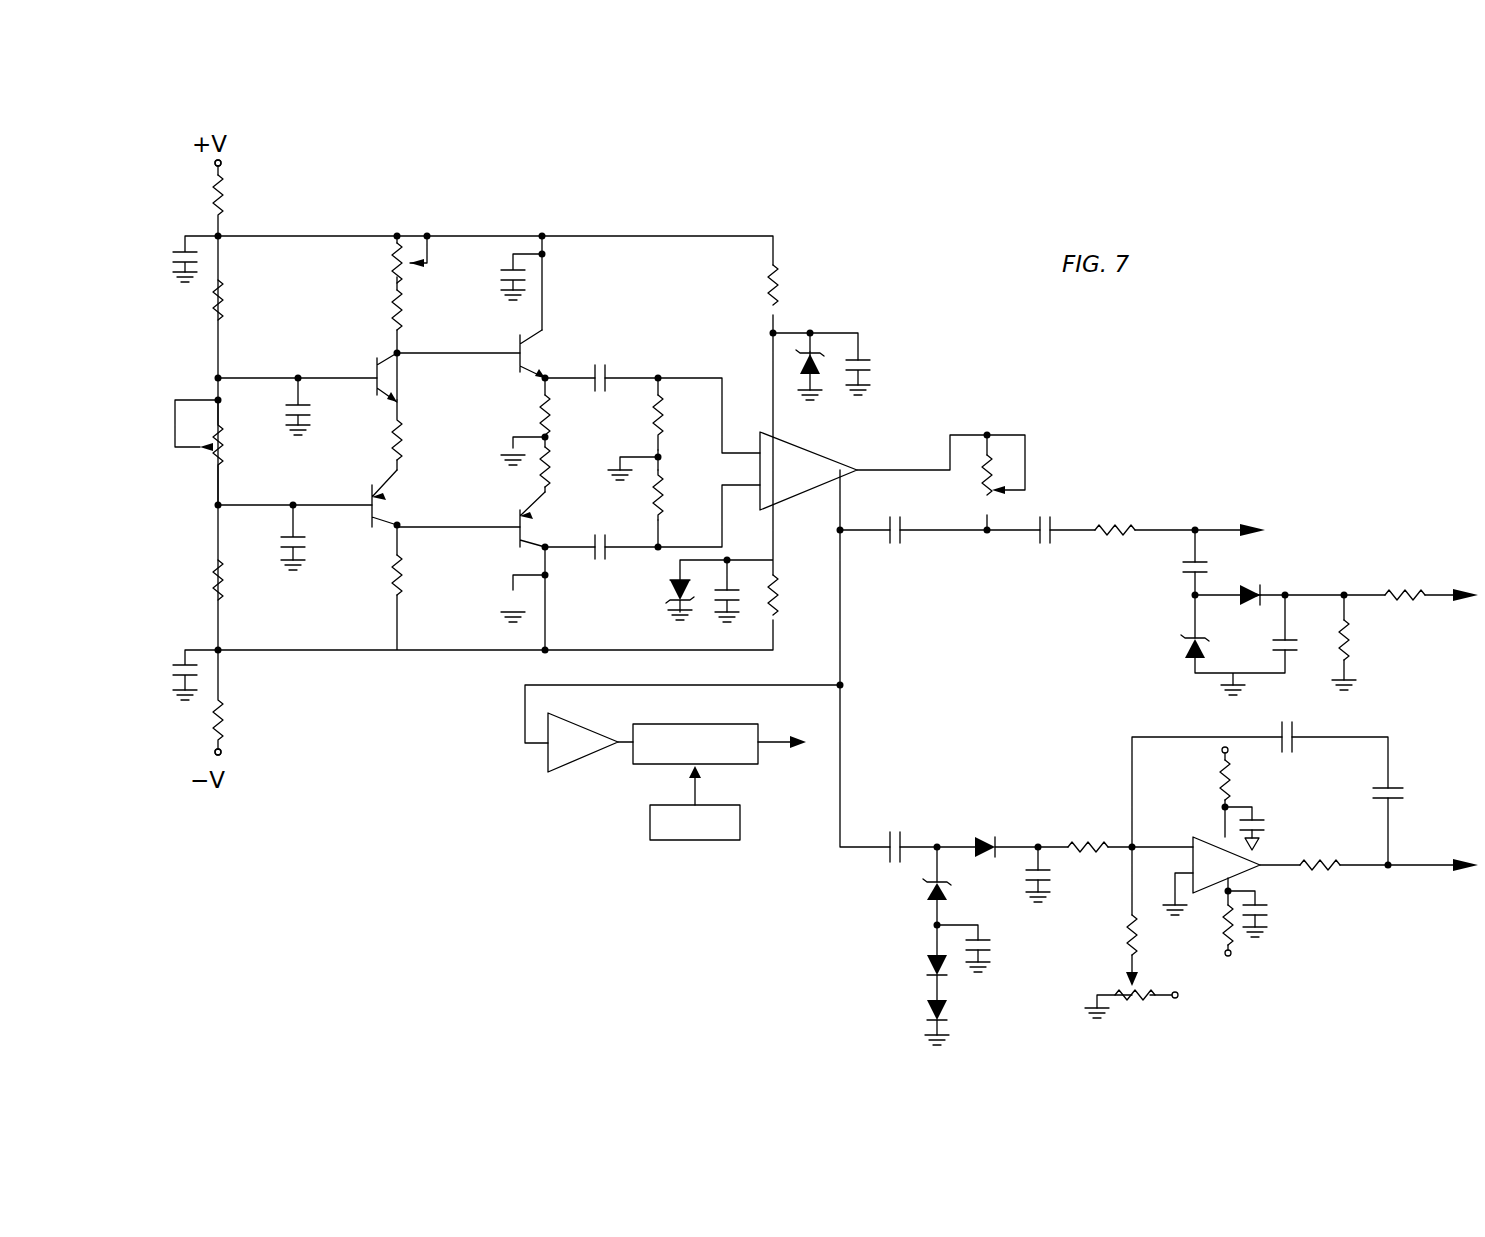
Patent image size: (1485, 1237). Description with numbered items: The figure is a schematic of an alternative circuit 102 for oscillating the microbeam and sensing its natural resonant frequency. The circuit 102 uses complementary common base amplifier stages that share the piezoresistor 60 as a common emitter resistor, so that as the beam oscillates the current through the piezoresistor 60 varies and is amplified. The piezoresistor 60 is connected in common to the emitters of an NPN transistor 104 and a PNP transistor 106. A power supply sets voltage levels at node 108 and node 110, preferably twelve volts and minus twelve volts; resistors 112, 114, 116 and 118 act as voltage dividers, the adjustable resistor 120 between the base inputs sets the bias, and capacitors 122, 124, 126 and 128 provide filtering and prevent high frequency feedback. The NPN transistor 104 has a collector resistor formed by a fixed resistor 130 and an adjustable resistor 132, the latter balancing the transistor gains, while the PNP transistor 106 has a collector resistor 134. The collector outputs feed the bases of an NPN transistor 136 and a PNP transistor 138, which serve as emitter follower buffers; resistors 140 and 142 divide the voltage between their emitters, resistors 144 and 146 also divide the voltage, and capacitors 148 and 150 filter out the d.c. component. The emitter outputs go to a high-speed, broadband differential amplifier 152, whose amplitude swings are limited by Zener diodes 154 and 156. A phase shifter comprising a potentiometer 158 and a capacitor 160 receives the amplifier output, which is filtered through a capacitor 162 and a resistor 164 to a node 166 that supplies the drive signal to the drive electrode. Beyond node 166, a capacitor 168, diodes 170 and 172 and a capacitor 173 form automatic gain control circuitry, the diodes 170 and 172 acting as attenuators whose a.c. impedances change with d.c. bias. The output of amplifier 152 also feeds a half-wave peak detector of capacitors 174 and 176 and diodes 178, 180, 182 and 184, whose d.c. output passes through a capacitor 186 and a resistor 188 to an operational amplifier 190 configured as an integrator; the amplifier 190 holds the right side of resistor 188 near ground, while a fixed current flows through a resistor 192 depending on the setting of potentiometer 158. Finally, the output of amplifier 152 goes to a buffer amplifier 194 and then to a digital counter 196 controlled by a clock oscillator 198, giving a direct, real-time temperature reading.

The piezoresistor 60 is at (405, 425).
The alternative circuit 102 is at (412, 757).
The NPN transistor 104 is at (374, 360).
The PNP transistor 106 is at (380, 530).
The node 108 is at (222, 168).
The node 110 is at (222, 752).
The resistor 112 is at (213, 196).
The resistor 114 is at (226, 300).
The resistor 116 is at (214, 577).
The resistor 118 is at (225, 705).
The adjustable resistor 120 is at (212, 457).
The capacitor 122 is at (181, 250).
The capacitor 124 is at (183, 648).
The capacitor 126 is at (302, 405).
The capacitor 128 is at (288, 535).
The fixed resistor 130 is at (405, 318).
The adjustable resistor 132 is at (390, 255).
The collector resistor 134 is at (407, 577).
The NPN transistor 136 is at (545, 334).
The PNP transistor 138 is at (540, 518).
The resistor 140 is at (552, 403).
The resistor 142 is at (555, 468).
The resistor 144 is at (665, 437).
The resistor 146 is at (665, 512).
The capacitor 148 is at (612, 375).
The capacitor 150 is at (605, 562).
The differential amplifier 152 is at (760, 430).
The Zener diode 154 is at (812, 348).
The Zener diode 156 is at (674, 600).
The potentiometer 158 is at (1000, 430).
The capacitor 160 is at (905, 548).
The capacitor 162 is at (1050, 512).
The resistor 164 is at (1122, 520).
The node 166 is at (1198, 526).
The capacitor 168 is at (1181, 575).
The diode 170 is at (1255, 590).
The diode 172 is at (1182, 652).
The capacitor 173 is at (1272, 645).
The capacitor 174 is at (897, 830).
The capacitor 176 is at (985, 952).
The diode 178 is at (985, 838).
The diode 180 is at (930, 893).
The diode 182 is at (928, 960).
The diode 184 is at (925, 1012).
The capacitor 186 is at (1045, 880).
The resistor 188 is at (1085, 840).
The operational amplifier 190 is at (1200, 838).
The resistor 192 is at (1138, 940).
The buffer amplifier 194 is at (573, 775).
The digital counter 196 is at (700, 724).
The clock oscillator 198 is at (700, 842).